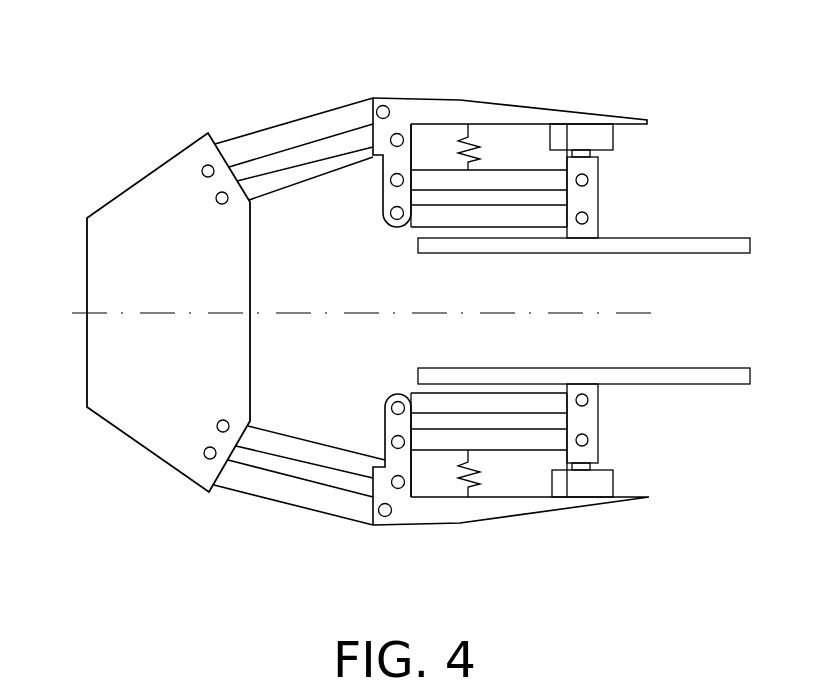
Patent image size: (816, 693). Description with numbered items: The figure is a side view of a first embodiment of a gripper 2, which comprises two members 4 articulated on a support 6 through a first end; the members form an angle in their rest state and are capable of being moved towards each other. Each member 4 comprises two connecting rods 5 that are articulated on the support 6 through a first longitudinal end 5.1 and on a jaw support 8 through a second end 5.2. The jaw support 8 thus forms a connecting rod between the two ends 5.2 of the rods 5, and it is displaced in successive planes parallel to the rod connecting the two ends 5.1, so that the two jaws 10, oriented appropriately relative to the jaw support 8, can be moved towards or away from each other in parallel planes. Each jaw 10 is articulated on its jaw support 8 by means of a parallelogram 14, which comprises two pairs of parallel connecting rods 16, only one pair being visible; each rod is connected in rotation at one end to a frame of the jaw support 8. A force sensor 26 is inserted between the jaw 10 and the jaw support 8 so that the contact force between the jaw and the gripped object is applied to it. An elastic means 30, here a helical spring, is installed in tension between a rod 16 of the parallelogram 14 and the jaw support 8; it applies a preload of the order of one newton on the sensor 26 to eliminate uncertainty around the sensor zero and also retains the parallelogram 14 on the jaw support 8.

The gripper 2 is at (520, 316).
The member 4 is at (393, 90).
The connecting rod 5 is at (288, 131).
The first longitudinal end 5.1 is at (202, 168).
The second end 5.2 is at (390, 140).
The support 6 is at (125, 215).
The jaw support 8 is at (474, 108).
The jaw 10 is at (583, 240).
The parallelogram 14 is at (405, 240).
The parallel connecting rods 16 is at (495, 403).
The force sensor 26 is at (595, 137).
The elastic means 30 is at (477, 147).